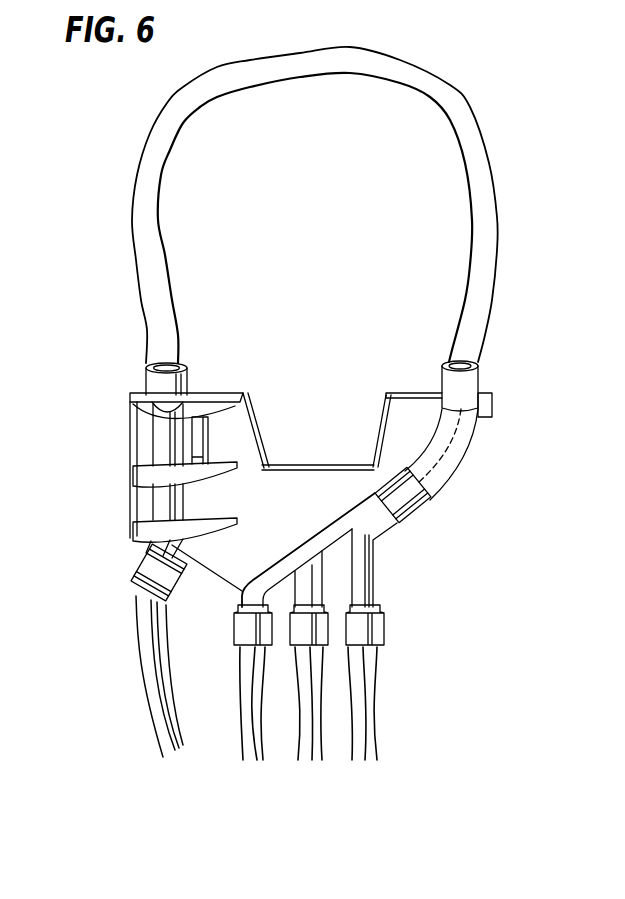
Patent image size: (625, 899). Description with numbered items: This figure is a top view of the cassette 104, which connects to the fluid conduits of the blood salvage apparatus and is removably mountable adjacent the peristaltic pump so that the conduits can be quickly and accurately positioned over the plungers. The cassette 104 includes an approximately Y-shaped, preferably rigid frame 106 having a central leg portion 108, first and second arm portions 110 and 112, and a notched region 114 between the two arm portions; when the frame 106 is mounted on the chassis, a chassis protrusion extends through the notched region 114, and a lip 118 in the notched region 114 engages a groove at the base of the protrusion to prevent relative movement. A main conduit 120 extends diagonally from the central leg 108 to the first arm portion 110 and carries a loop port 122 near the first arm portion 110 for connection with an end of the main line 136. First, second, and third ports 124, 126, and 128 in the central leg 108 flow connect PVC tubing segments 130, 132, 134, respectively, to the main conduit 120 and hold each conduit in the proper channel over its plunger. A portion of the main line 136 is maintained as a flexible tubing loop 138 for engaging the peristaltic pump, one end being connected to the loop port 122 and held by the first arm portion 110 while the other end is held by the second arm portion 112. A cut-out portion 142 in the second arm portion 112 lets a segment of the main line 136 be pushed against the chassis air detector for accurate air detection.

The cassette 104 is at (220, 376).
The frame 106 is at (215, 577).
The central leg portion 108 is at (336, 593).
The first arm portion 110 is at (421, 395).
The second arm portion 112 is at (136, 396).
The notched region 114 is at (349, 431).
The lip 118 is at (283, 463).
The main conduit 120 is at (308, 542).
The loop port 122 is at (413, 510).
The first port 124 is at (232, 633).
The second port 126 is at (289, 645).
The third port 128 is at (385, 628).
The PVC tubing segment 130 is at (242, 748).
The PVC tubing segment 132 is at (323, 748).
The PVC tubing segment 134 is at (378, 747).
The main line 136 is at (137, 662).
The tubing loop 138 is at (313, 51).
The cut-out portion 142 is at (148, 448).